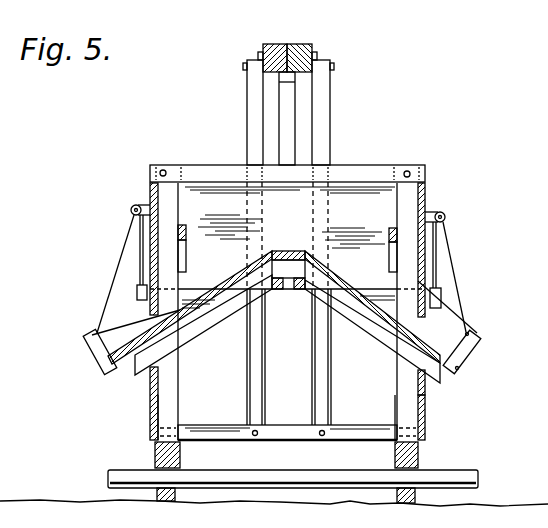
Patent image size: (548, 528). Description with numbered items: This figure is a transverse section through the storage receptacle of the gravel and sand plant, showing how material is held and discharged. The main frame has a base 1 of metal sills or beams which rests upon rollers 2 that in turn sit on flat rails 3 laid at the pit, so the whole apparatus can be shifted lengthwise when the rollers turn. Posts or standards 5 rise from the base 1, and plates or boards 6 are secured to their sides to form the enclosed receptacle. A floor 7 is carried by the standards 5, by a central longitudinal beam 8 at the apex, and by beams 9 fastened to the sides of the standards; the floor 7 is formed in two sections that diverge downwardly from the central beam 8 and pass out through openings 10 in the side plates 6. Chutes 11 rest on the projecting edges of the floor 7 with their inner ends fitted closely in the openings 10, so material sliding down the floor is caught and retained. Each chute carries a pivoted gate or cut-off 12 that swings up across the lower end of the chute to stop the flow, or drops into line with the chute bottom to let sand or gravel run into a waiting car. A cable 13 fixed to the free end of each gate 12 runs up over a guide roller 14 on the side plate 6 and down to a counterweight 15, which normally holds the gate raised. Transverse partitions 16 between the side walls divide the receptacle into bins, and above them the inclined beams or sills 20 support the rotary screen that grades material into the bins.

The base 1 is at (416, 463).
The rollers 2 is at (458, 482).
The flat rails 3 is at (407, 504).
The posts or standards 5 is at (396, 391).
The plates or boards 6 is at (150, 184).
The floor 7 is at (233, 316).
The central longitudinal beam 8 is at (299, 291).
The beams 9 is at (432, 396).
The openings 10 is at (170, 340).
The chutes 11 is at (130, 358).
The gate or cut-off 12 is at (95, 336).
The cable 13 is at (122, 249).
The guide roller 14 is at (131, 208).
The counterweight 15 is at (135, 295).
The transverse partitions 16 is at (365, 197).
The beams or sills 20 is at (314, 61).